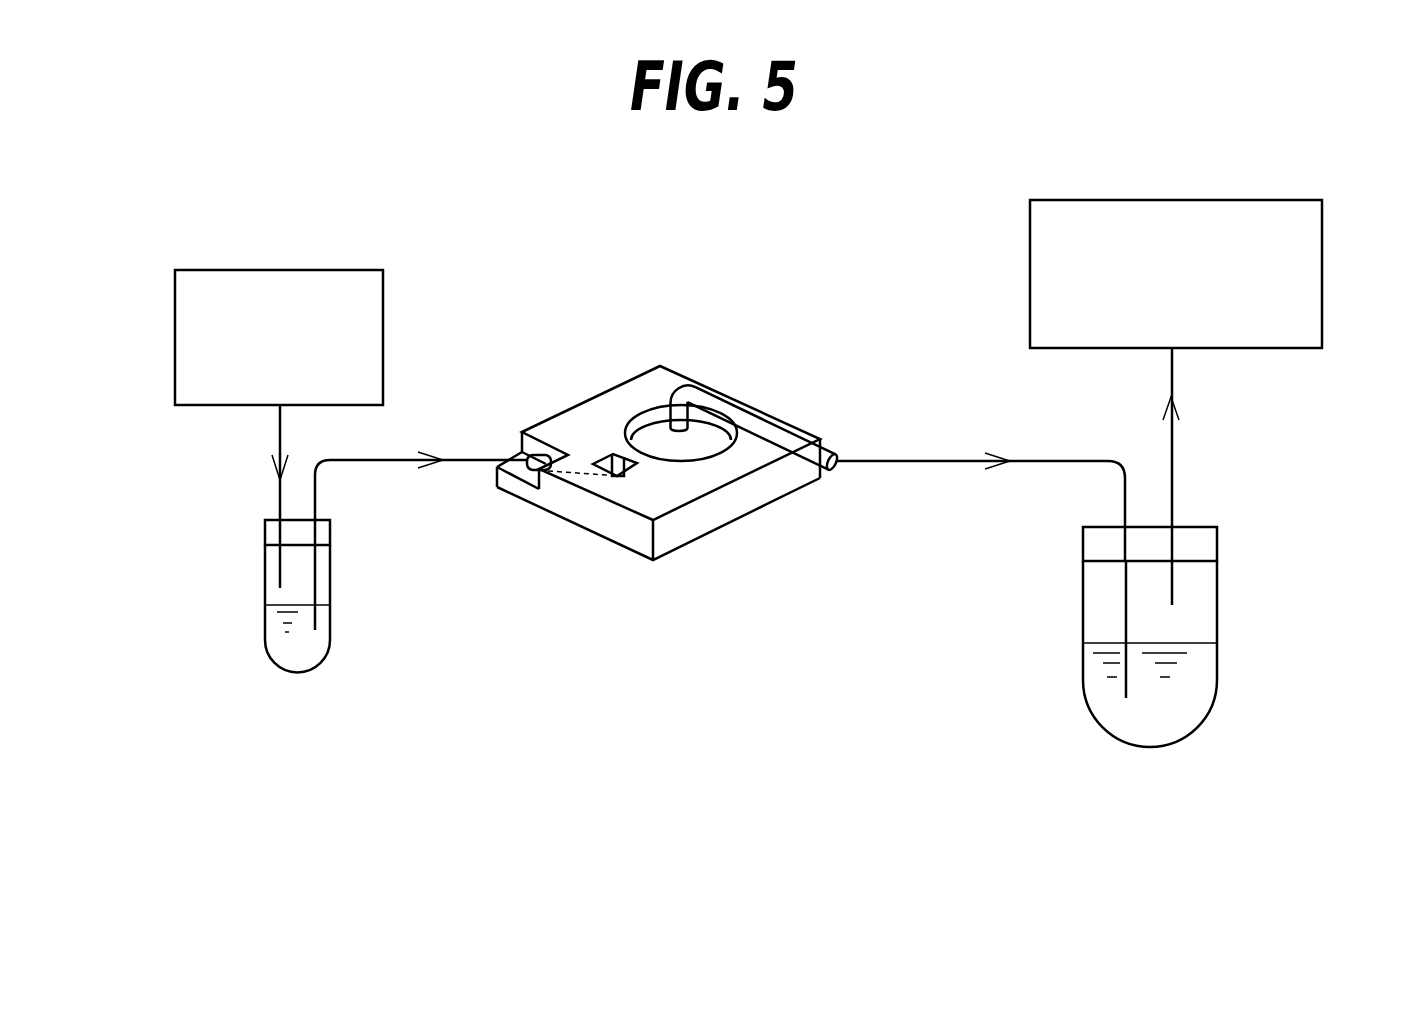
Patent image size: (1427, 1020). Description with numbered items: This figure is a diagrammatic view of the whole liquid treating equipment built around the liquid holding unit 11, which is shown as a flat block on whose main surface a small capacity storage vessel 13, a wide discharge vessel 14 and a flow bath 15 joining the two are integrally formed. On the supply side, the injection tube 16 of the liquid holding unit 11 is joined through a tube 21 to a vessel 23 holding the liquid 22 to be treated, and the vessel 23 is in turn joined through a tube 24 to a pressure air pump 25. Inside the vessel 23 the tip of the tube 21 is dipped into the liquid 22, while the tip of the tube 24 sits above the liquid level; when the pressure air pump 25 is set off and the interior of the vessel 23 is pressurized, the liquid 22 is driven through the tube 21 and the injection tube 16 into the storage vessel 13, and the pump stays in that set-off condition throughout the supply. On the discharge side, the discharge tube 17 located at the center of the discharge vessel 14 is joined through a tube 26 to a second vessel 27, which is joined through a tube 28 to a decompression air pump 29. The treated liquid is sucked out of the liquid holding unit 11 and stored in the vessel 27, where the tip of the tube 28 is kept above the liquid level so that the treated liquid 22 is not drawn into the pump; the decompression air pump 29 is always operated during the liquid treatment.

The liquid holding unit 11 is at (698, 563).
The storage vessel 13 is at (597, 457).
The discharge vessel 14 is at (657, 440).
The flow bath 15 is at (620, 452).
The injection tube 16 is at (570, 478).
The discharge tube 17 is at (758, 430).
The tube 21 is at (400, 462).
The liquid 22 is at (288, 650).
The vessel 23 is at (265, 585).
The tube 24 is at (280, 440).
The pressure air pump 25 is at (175, 325).
The tube 26 is at (943, 460).
The vessel 27 is at (1083, 607).
The tube 28 is at (1172, 457).
The decompression air pump 29 is at (1323, 270).